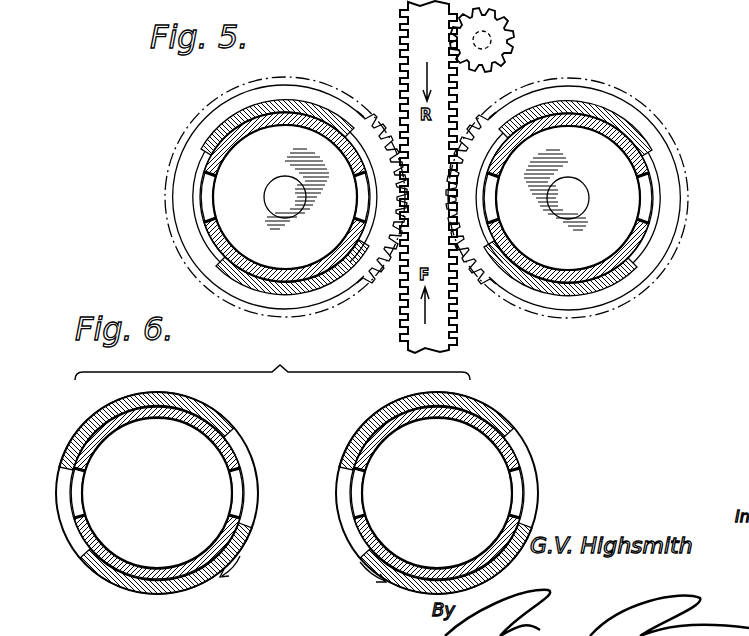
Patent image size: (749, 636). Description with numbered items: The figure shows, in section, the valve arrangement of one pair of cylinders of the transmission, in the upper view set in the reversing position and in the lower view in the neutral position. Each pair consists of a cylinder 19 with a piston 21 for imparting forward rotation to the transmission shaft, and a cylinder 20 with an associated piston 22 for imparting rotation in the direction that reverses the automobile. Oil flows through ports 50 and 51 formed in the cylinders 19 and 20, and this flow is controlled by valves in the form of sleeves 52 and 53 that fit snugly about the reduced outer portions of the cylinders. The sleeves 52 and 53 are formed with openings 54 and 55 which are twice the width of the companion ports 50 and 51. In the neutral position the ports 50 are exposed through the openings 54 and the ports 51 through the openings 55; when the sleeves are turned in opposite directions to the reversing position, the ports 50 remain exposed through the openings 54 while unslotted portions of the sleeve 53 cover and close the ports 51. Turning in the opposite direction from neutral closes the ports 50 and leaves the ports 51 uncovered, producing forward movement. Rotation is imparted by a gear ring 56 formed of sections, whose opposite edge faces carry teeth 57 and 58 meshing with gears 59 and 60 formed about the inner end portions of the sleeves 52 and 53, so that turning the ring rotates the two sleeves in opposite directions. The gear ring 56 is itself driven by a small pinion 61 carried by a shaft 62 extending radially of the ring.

In FIG. 5, the cylinder 19 is at (315, 110).
In FIG. 6, the cylinder 19 is at (194, 418).
In FIG. 5, the cylinder 20 is at (558, 118).
In FIG. 6, the cylinder 20 is at (481, 420).
In FIG. 5, the piston 21 is at (280, 189).
In FIG. 5, the piston 22 is at (556, 186).
In FIG. 5, the port 50 is at (207, 193).
In FIG. 6, the port 50 is at (74, 487).
In FIG. 5, the port 51 is at (492, 213).
In FIG. 6, the port 51 is at (357, 502).
In FIG. 5, the sleeve 52 is at (268, 107).
In FIG. 6, the sleeve 52 is at (181, 404).
In FIG. 5, the sleeve 53 is at (655, 251).
In FIG. 6, the sleeve 53 is at (377, 417).
In FIG. 5, the opening 54 is at (200, 147).
In FIG. 6, the opening 54 is at (58, 478).
In FIG. 5, the opening 55 is at (622, 125).
In FIG. 6, the opening 55 is at (518, 455).
In FIG. 5, the gear ring 56 is at (400, 80).
In FIG. 5, the teeth 57 is at (403, 311).
In FIG. 5, the teeth 58 is at (457, 327).
In FIG. 5, the gear 59 is at (370, 262).
In FIG. 5, the gear 60 is at (498, 280).
In FIG. 5, the pinion 61 is at (507, 38).
In FIG. 5, the shaft 62 is at (492, 45).